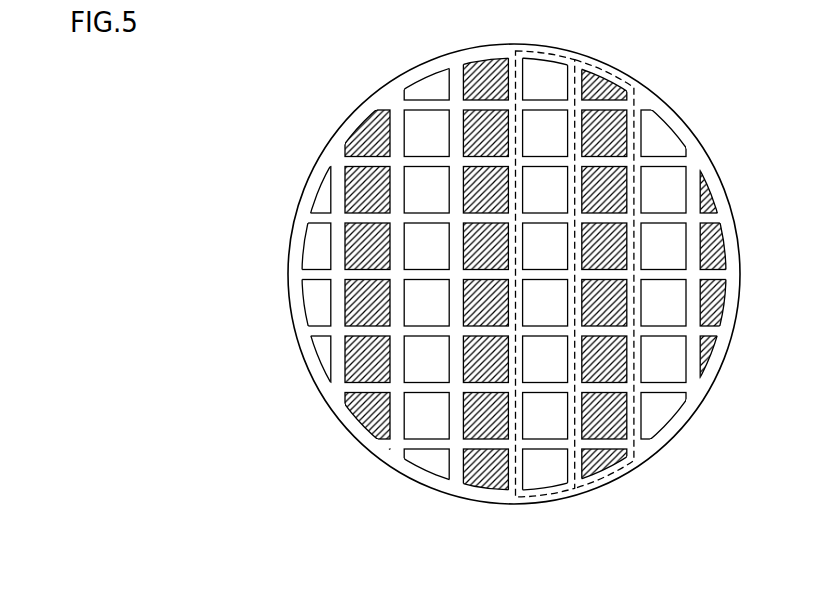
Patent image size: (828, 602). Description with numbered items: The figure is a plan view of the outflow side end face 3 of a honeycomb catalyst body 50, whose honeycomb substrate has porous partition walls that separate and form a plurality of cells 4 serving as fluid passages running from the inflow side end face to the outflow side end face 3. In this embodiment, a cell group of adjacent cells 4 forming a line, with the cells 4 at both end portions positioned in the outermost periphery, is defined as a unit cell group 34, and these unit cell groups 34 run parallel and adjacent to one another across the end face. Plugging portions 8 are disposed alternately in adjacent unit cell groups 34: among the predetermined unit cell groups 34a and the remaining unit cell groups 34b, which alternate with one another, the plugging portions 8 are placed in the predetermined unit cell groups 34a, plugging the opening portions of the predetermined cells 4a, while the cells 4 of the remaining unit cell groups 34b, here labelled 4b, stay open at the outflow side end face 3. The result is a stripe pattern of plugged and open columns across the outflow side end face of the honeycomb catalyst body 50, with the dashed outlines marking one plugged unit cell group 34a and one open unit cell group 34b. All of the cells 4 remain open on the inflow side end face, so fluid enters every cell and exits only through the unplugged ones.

The honeycomb catalyst body 50 is at (777, 88).
The outflow side end face 3 is at (694, 158).
The cells 4 is at (557, 275).
The predetermined cells 4a is at (620, 238).
The second chip region 4b is at (673, 291).
The plugging portions 8 is at (620, 417).
The unit cell group 34 is at (624, 307).
The predetermined unit cell groups 34a is at (637, 444).
The remaining unit cell groups 34b is at (563, 492).